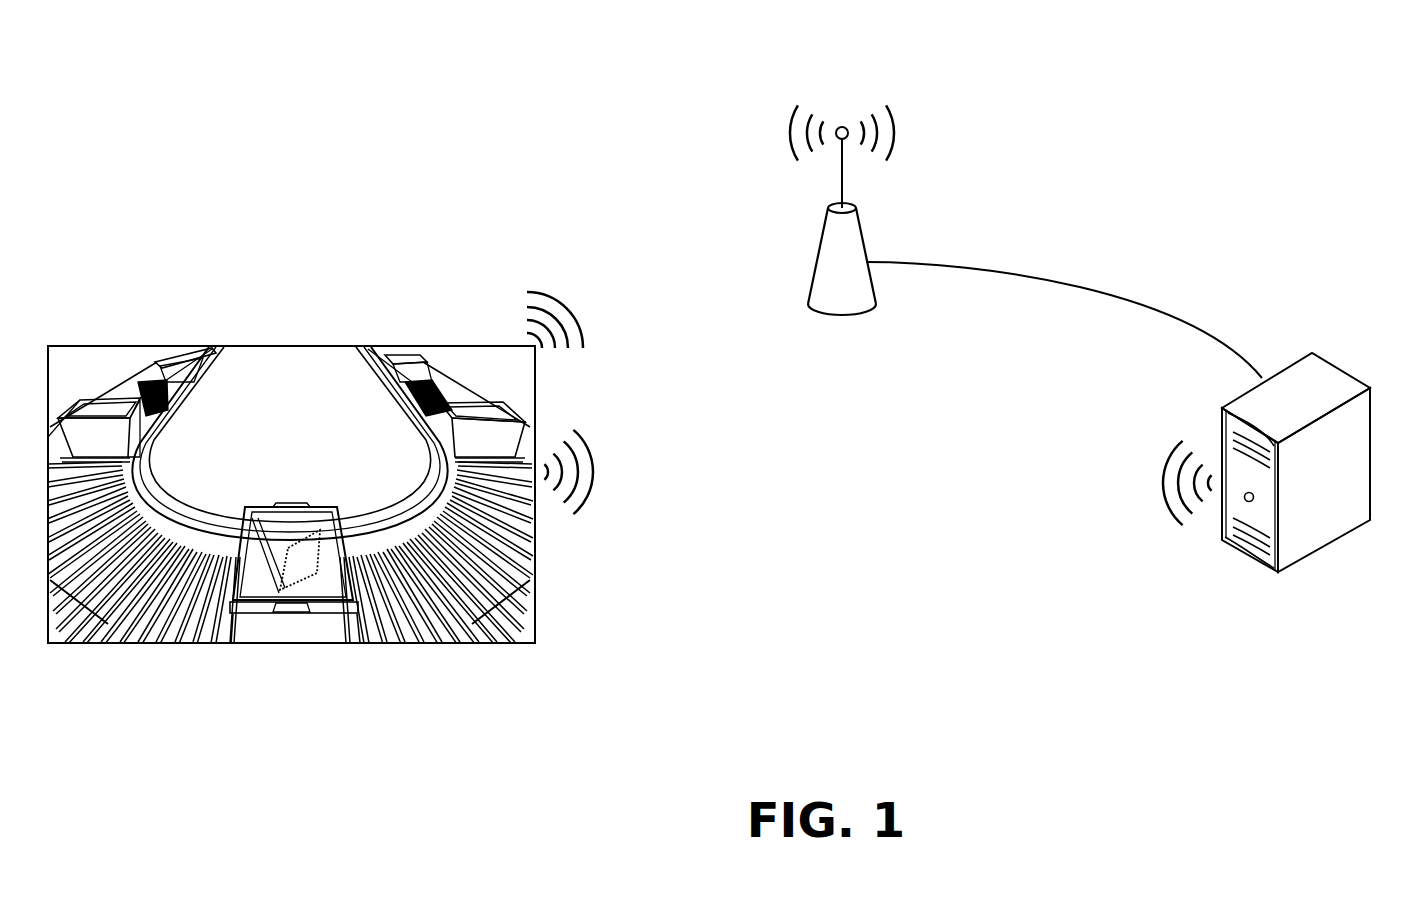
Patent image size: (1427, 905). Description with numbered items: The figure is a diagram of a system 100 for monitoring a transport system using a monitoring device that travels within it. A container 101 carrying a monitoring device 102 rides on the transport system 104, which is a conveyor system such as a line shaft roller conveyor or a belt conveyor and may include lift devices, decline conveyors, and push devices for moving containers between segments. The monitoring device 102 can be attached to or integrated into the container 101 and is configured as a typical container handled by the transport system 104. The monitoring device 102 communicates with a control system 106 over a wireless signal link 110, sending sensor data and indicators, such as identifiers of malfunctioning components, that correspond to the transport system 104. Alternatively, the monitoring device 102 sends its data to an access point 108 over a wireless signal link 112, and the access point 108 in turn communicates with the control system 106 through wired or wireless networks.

The system 100 is at (1215, 87).
The container 101 is at (257, 630).
The monitoring device 102 is at (298, 573).
The transport system 104 is at (110, 625).
The control system 106 is at (1343, 368).
The access point 108 is at (863, 230).
The wireless signal link 110 is at (600, 474).
The wireless signal link 112 is at (561, 300).